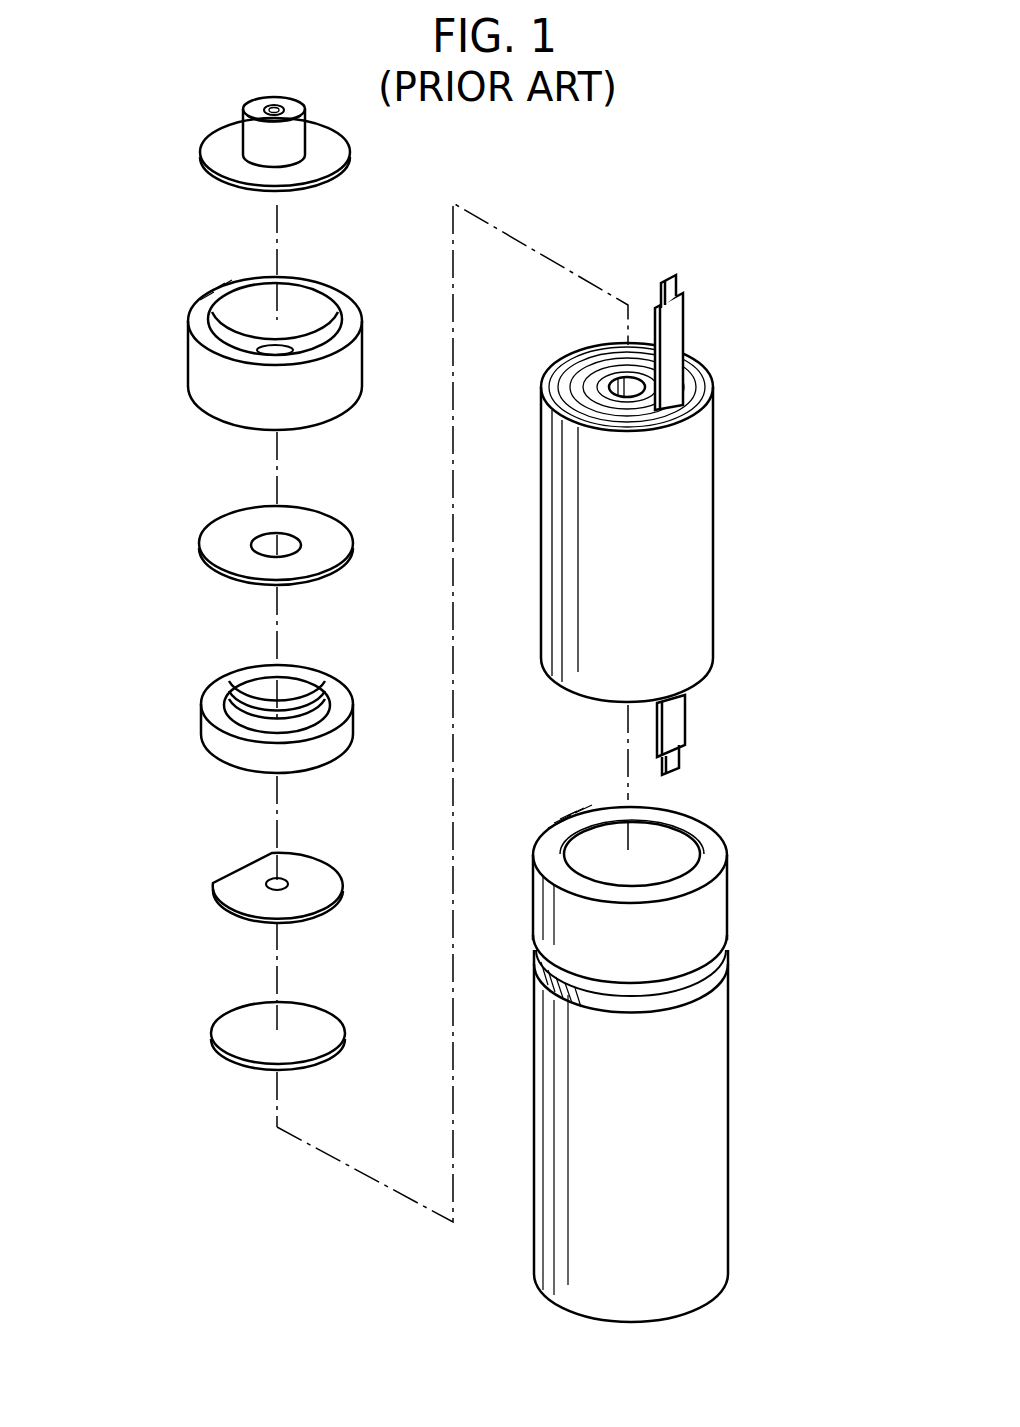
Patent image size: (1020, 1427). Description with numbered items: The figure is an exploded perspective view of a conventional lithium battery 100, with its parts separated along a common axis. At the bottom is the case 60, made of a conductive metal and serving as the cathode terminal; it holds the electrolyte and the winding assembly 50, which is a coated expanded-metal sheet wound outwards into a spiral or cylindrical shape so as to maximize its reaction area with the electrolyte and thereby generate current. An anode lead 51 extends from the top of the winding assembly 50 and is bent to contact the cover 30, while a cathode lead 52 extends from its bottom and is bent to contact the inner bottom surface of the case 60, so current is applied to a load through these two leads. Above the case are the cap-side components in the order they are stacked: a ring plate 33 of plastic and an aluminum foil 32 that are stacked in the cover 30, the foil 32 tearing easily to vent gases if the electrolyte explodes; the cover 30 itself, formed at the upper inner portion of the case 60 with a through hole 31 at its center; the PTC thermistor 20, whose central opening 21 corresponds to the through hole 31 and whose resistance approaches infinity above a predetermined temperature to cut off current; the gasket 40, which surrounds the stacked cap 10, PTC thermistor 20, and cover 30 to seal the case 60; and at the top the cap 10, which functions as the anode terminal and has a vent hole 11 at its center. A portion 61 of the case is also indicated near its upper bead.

The lithium battery 100 is at (128, 290).
The cap 10 is at (200, 160).
The vent hole 11 is at (268, 112).
The gasket 40 is at (188, 360).
The PTC thermistor 20 is at (200, 548).
The opening 21 is at (268, 548).
The cover 30 is at (203, 724).
The through hole 31 is at (268, 722).
The aluminum foil 32 is at (213, 892).
The ring plate 33 is at (213, 1040).
The winding assembly 50 is at (724, 495).
The anode lead 51 is at (683, 326).
The cathode lead 52 is at (685, 718).
The case 60 is at (676, 1183).
The beading part 61 is at (668, 983).